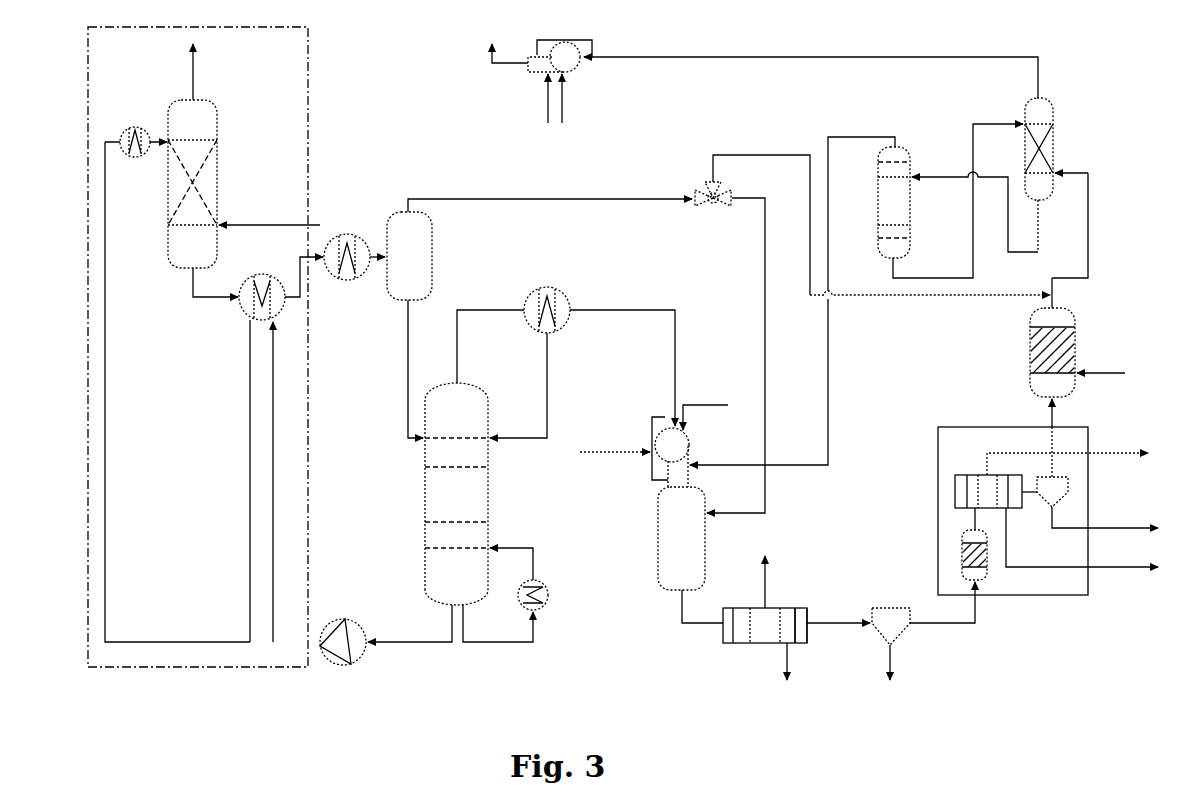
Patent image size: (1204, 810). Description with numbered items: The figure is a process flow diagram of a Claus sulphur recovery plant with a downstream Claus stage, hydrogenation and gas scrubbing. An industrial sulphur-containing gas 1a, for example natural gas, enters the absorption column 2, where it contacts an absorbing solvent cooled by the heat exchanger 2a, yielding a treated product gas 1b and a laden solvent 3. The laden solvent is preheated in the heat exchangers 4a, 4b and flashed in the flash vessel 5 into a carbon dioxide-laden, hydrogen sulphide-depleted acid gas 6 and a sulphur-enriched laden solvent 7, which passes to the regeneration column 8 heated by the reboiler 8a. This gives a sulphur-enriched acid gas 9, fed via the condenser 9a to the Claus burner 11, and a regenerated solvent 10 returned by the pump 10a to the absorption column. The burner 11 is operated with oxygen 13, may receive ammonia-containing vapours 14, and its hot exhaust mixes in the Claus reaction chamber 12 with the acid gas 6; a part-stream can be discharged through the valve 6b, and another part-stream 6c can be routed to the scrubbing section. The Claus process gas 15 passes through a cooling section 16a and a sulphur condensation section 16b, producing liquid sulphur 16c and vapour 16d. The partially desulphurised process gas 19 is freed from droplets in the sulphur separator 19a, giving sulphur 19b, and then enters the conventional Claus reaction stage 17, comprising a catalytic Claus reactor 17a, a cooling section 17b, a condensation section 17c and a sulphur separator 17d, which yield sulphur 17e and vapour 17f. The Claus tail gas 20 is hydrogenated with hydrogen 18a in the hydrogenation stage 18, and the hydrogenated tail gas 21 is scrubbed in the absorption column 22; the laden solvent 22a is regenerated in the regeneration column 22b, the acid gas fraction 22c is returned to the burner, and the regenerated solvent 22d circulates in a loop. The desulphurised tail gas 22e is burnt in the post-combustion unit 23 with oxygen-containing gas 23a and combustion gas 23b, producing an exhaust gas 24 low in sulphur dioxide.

The industrial sulphur-containing gas to be treated 1a is at (269, 227).
The treated product gas 1b is at (158, 72).
The absorption column 2 is at (212, 107).
The heat exchanger 2a is at (130, 123).
The laden solvent 3 is at (239, 294).
The heat exchanger 4a is at (248, 322).
The heat exchanger 4b is at (357, 283).
The flash vessel 5 is at (436, 252).
The carbon dioxide-laden, hydrogen sulphide-depleted acid gas 6 is at (594, 346).
The valve 6b is at (709, 208).
The part-stream of the carbon dioxide-laden, hydrogen sulphide-depleted acid gas 6c is at (881, 216).
The carbon dioxide-depleted, sulphur constituents-enriched laden solvent 7 is at (405, 369).
The regeneration column 8 is at (493, 412).
The reboiler 8a is at (550, 596).
The carbon dioxide-depleted, sulphur constituents-enriched acid gas 9 is at (566, 362).
The condenser 9a is at (567, 294).
The regenerated solvent 10 is at (299, 634).
The pump 10a is at (365, 658).
The Claus burner 11 is at (692, 440).
The Claus reaction chamber 12 is at (658, 574).
The oxygen or oxygen-containing gas 13 is at (615, 452).
The ammonia-containing vapours 14 is at (705, 417).
The Claus process gas 15 is at (689, 606).
The cooling section 16a is at (730, 624).
The sulphur condensation section 16b is at (795, 602).
The sulphur 16c is at (773, 661).
The vapour 16d is at (772, 572).
The conventional Claus reaction stage 17 is at (930, 528).
The catalytic Claus reactor 17a is at (969, 612).
The cooling section 17b is at (975, 474).
The condensation section 17c is at (1010, 515).
The sulphur separator 17d is at (1027, 463).
The sulphur 17e is at (1082, 547).
The vapour 17f is at (1067, 455).
The hydrogenation stage 18 is at (1078, 322).
The hydrogen 18a is at (1101, 375).
The desulphurised Claus process gas 19 is at (838, 613).
The sulphur separator 19a is at (878, 596).
The sulphur 19b is at (906, 662).
The Claus tail gas 20 is at (1042, 420).
The hydrogenated Claus tail gas 21 is at (1081, 225).
The absorption column of the gas scrubbing section 22 is at (1056, 112).
The laden solvent 22a is at (975, 223).
The regeneration column 22b is at (914, 160).
The acid gas fraction 22c is at (792, 291).
The regenerated solvent 22d is at (958, 201).
The desulphurised Claus tail gas 22e is at (1032, 82).
The post-combustion unit 23 is at (570, 42).
The oxygen-containing gas 23a is at (531, 100).
The combustion gas 23b is at (577, 98).
The exhaust gas 24 is at (507, 43).